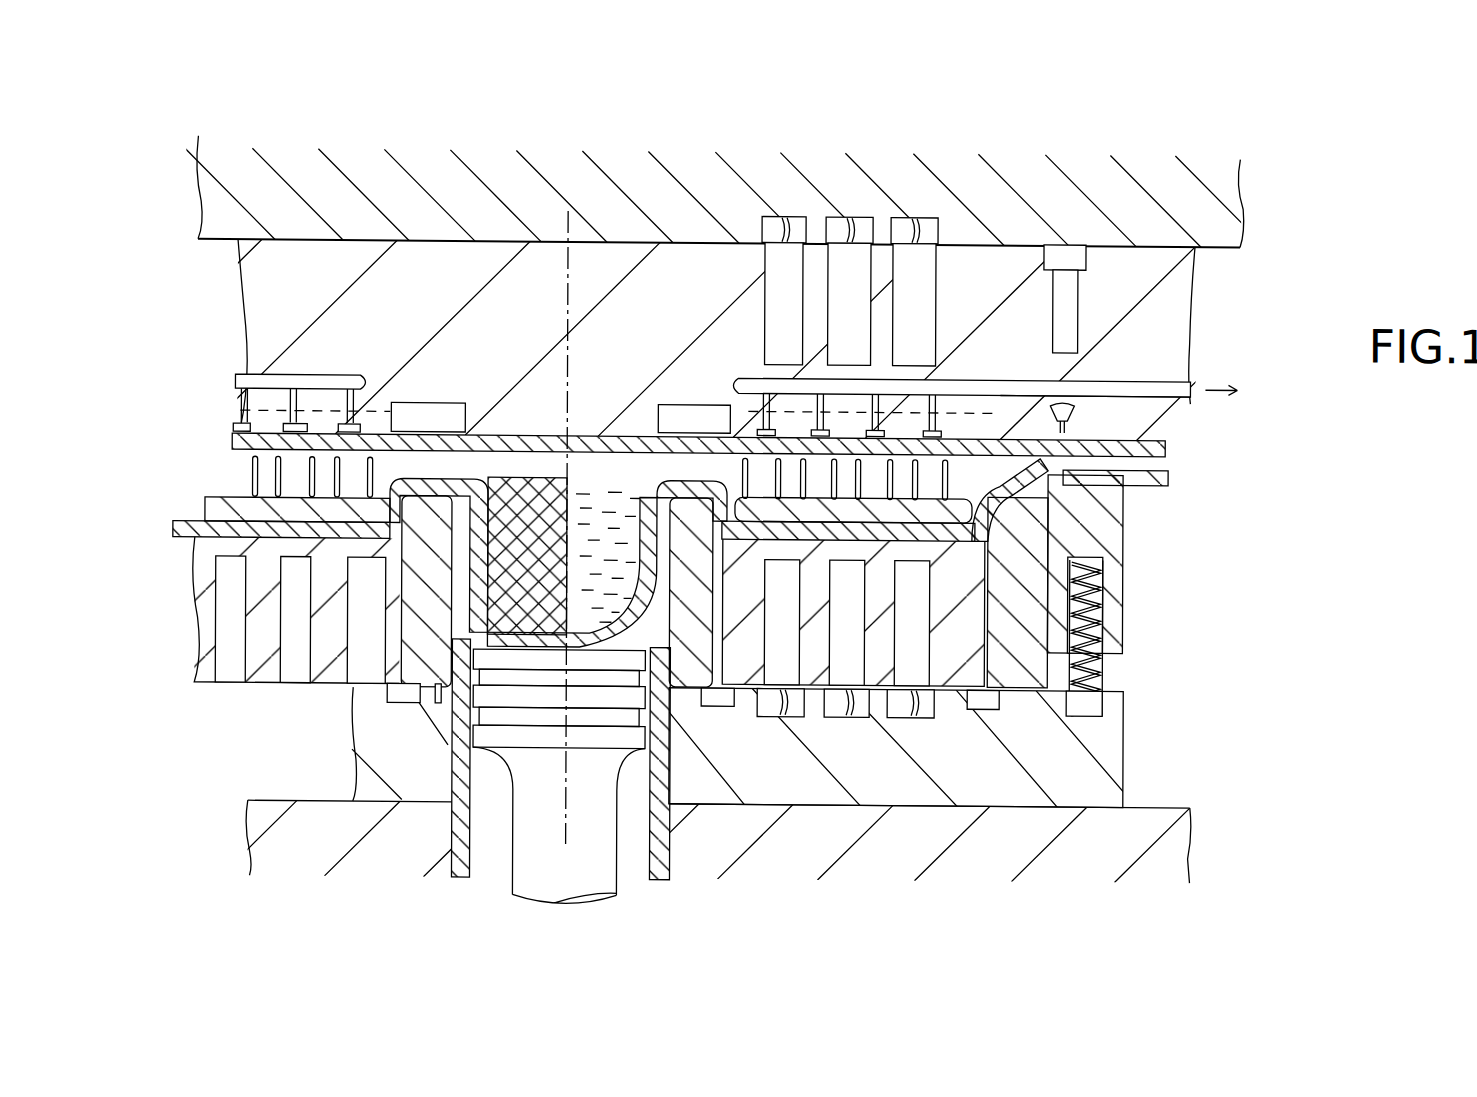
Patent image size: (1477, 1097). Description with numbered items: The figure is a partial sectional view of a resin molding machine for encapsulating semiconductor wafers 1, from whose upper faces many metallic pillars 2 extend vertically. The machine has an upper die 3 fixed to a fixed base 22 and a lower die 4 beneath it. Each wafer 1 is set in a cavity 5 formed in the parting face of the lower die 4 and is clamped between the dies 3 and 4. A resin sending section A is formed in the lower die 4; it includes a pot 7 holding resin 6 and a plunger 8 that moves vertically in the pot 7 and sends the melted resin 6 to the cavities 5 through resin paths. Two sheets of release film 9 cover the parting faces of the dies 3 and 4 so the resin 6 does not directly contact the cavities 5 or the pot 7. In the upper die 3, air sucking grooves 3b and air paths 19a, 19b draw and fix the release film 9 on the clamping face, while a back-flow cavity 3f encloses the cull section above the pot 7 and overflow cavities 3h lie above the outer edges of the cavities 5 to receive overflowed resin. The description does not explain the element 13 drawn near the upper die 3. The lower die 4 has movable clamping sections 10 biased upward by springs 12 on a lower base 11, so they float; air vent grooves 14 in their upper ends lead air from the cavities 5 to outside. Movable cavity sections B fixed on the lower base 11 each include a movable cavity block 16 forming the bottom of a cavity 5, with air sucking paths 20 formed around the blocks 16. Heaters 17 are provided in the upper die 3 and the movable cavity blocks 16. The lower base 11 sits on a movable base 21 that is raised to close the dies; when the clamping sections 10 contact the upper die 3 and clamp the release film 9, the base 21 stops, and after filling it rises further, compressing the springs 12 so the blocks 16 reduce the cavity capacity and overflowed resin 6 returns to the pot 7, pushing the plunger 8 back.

The semiconductor wafer 1 is at (215, 515).
The metallic pillars 2 is at (232, 451).
The upper die 3 is at (1270, 258).
The air sucking grooves 3b is at (237, 427).
The back-flow cavity 3f is at (450, 405).
The overflow cavities 3h is at (1072, 296).
The lower die 4 is at (1218, 608).
The cavities 5 is at (245, 483).
The resin 6 is at (633, 494).
The pot 7 is at (463, 762).
The plunger 8 is at (528, 808).
The release film 9 is at (1150, 484).
The movable clamping sections 10 is at (1107, 547).
The lower base 11 is at (1093, 747).
The springs 12 is at (1103, 660).
The circuit board 13 is at (1183, 405).
The air vent grooves 14 is at (1190, 366).
The movable cavity block 16 is at (200, 543).
The heaters 17 is at (923, 266).
The air paths 19a is at (1090, 274).
The air paths 19b is at (340, 380).
The air sucking paths 20 is at (344, 685).
The movable base 21 is at (1167, 808).
The fixed base 22 is at (1202, 248).
The resin sending section A is at (656, 800).
The movable cavity sections B is at (969, 756).